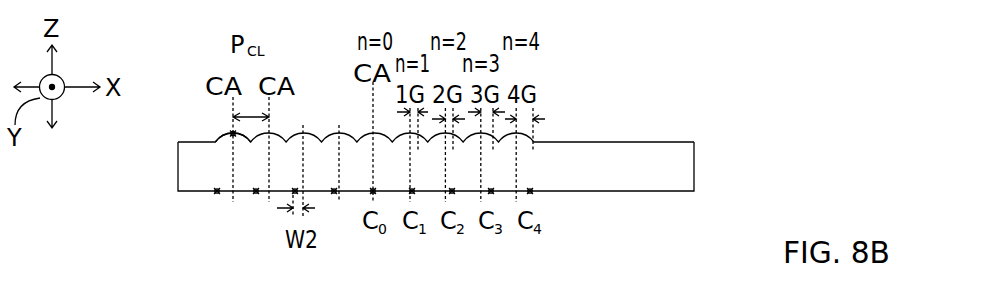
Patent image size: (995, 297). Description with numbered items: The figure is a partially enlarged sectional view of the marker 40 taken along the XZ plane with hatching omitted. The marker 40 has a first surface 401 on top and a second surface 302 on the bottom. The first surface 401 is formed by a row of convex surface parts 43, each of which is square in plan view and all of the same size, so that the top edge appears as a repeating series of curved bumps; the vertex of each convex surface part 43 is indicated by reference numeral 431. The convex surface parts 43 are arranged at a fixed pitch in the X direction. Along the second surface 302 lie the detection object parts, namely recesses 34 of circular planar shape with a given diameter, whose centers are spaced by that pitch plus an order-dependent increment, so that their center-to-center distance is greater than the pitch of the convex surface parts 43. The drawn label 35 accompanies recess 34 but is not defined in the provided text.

The marker 40 is at (434, 135).
The first surface 401 is at (467, 97).
The second surface 302 is at (697, 206).
The convex surface part 43 is at (350, 136).
The vertex of convex surface part 431 is at (232, 132).
The pixel 35 is at (306, 223).
The recess 34 is at (217, 193).